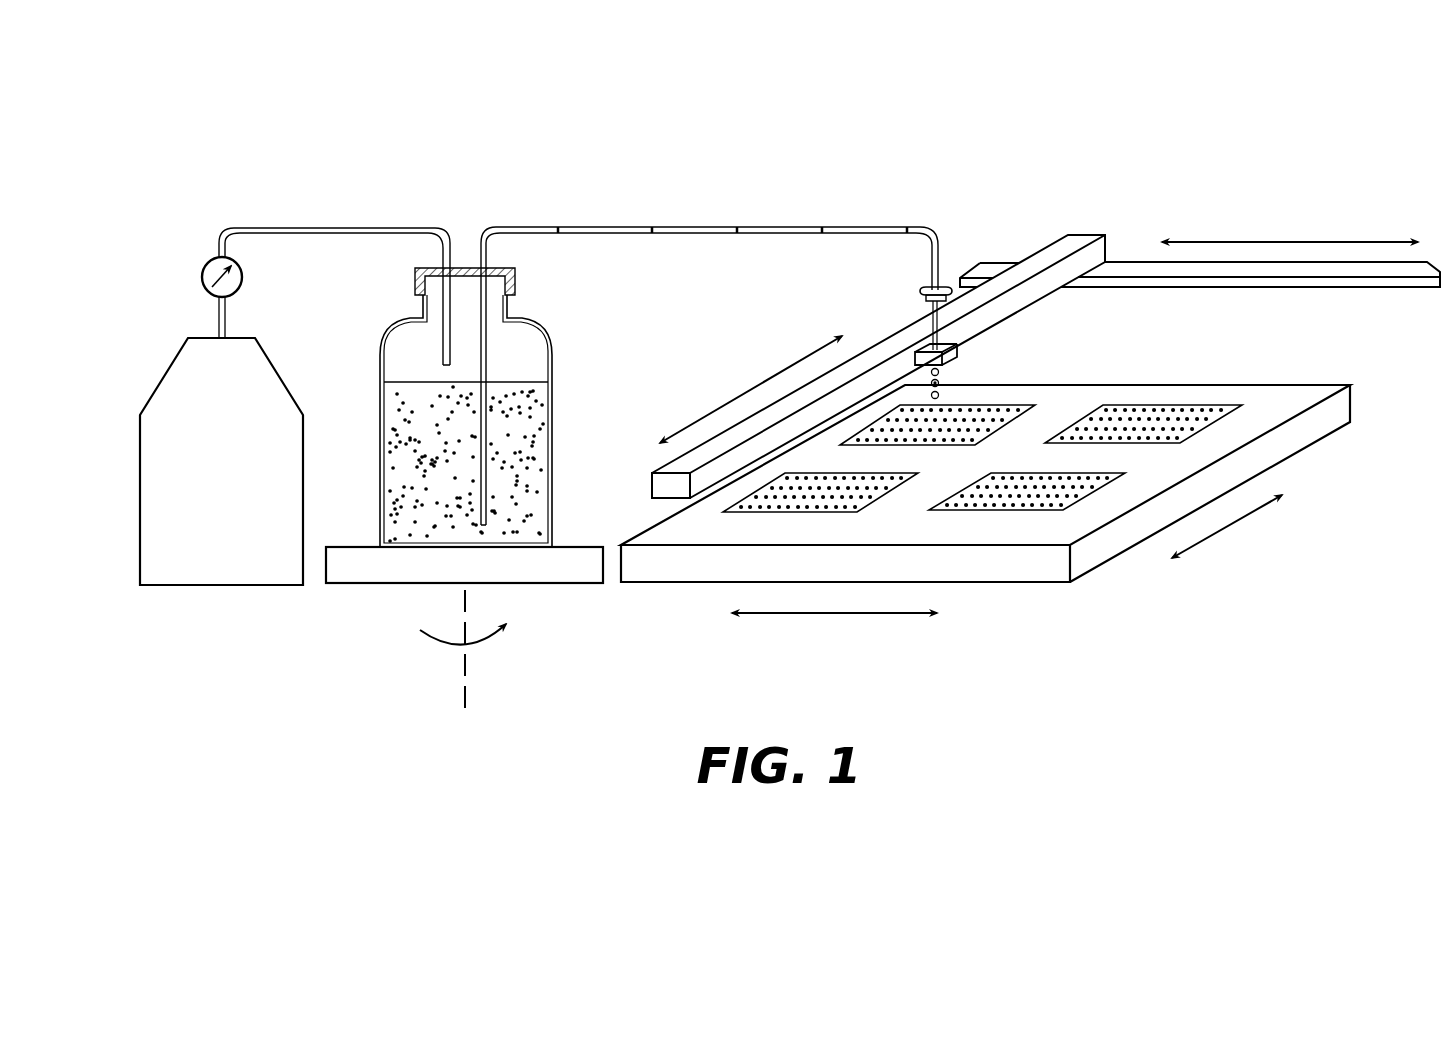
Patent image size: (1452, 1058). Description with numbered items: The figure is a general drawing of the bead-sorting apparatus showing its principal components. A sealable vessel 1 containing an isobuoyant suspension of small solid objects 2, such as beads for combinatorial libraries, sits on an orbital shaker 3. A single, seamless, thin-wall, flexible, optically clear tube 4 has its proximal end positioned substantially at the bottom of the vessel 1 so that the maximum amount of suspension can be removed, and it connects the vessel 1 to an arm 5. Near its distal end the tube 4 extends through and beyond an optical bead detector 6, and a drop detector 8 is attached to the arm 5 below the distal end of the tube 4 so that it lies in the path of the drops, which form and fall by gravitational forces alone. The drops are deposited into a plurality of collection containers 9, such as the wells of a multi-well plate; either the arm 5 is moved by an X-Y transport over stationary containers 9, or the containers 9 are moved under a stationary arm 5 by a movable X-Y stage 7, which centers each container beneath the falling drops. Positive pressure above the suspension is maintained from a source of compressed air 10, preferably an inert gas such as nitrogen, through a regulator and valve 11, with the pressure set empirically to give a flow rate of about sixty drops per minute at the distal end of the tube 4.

The sealable vessel 1 is at (553, 412).
The small solid objects 2 is at (512, 490).
The orbital shaker 3 is at (577, 572).
The tube 4 is at (639, 227).
The arm 5 is at (870, 358).
The optical bead detector 6 is at (922, 303).
The X-Y stage 7 is at (1282, 447).
The drop detector 8 is at (957, 350).
The collection containers 9 is at (948, 435).
The source of compressed air 10 is at (162, 462).
The regulator and valve 11 is at (210, 279).